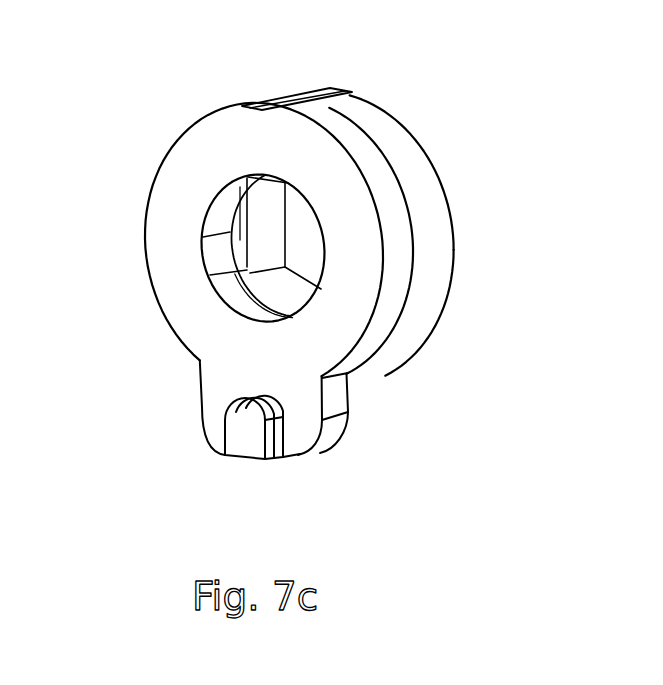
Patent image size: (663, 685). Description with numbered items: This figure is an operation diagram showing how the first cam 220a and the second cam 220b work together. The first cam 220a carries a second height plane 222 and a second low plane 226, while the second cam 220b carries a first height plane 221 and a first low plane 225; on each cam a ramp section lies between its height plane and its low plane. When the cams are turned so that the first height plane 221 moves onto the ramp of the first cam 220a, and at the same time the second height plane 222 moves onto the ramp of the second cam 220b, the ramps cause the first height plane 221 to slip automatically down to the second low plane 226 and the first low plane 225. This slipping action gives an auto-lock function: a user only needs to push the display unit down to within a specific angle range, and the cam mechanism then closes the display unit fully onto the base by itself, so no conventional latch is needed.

The first cam 220a is at (193, 148).
The second cam 220b is at (397, 133).
The first height plane 221 is at (442, 267).
The second height plane 222 is at (380, 173).
The first low plane 225 is at (357, 103).
The second low plane 226 is at (390, 303).